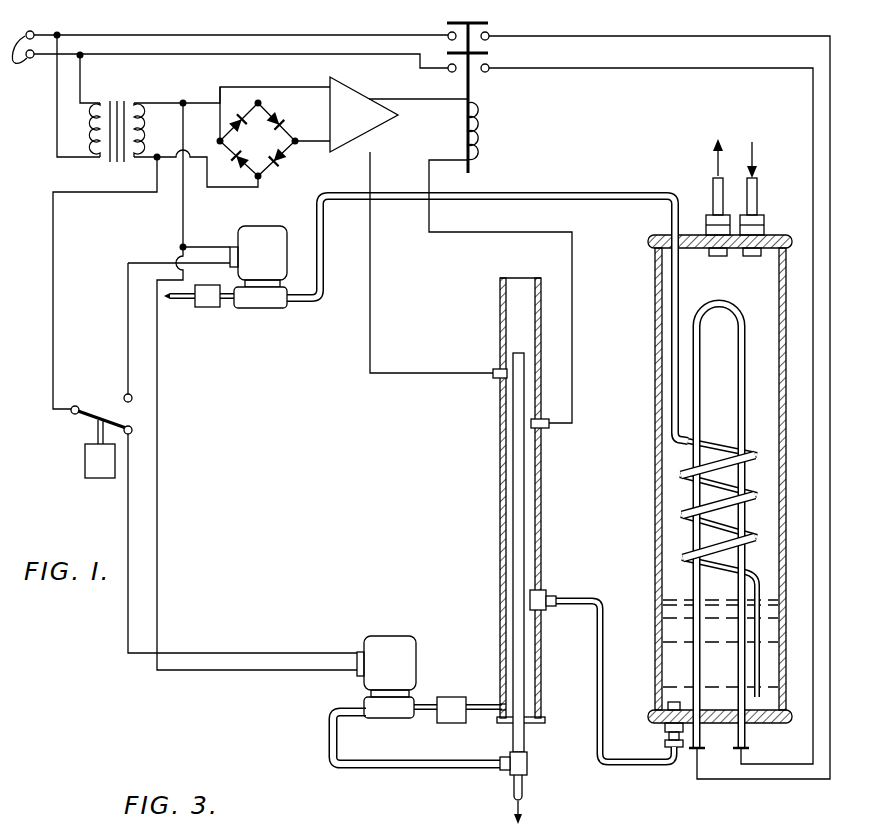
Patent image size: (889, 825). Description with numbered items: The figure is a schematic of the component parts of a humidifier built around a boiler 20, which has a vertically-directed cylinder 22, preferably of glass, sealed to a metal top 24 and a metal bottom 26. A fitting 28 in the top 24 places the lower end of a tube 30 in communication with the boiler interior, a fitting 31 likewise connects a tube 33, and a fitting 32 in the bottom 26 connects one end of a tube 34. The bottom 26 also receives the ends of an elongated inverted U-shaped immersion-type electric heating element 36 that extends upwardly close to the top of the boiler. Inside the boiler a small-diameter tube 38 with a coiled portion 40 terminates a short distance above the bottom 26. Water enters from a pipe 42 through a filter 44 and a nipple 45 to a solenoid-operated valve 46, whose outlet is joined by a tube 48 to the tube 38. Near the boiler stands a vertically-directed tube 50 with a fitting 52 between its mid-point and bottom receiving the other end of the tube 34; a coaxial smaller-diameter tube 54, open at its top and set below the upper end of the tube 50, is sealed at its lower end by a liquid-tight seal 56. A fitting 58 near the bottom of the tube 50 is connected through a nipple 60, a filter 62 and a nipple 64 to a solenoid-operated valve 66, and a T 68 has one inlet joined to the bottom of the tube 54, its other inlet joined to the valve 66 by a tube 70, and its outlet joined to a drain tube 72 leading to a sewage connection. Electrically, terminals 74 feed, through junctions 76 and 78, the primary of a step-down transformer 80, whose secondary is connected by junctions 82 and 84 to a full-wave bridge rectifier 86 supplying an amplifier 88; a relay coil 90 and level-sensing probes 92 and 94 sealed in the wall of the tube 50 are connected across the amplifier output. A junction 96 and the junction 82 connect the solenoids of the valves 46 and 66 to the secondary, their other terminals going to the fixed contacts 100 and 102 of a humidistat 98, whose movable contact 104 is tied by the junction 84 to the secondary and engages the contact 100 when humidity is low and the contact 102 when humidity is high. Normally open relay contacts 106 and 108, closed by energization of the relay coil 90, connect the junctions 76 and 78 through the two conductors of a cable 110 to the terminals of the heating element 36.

The boiler 20 is at (573, 449).
The cylinder 22 is at (657, 495).
The top 24 is at (764, 236).
The bottom 26 is at (771, 724).
The fitting 28 is at (717, 257).
The tube 30 is at (713, 180).
The fitting 31 is at (752, 256).
The fitting 32 is at (667, 729).
The tube 33 is at (758, 180).
The tube 34 is at (627, 767).
The heating element 36 is at (722, 322).
The small-diameter tube 38 is at (762, 662).
The coiled portion 40 is at (684, 516).
The pipe 42 is at (176, 305).
The filter 44 is at (208, 309).
The nipple 45 is at (230, 304).
The solenoid-operated valve 46 is at (284, 309).
The tube 48 is at (584, 193).
The vertically-directed tube 50 is at (515, 518).
The fitting 52 is at (548, 592).
The smaller-diameter tube 54 is at (524, 518).
The liquid-tight seal 56 is at (537, 725).
The fitting 58 is at (497, 704).
The nipple 60 is at (478, 724).
The filter 62 is at (444, 722).
The nipple 64 is at (416, 705).
The solenoid-operated valve 66 is at (385, 719).
The T 68 is at (527, 772).
The tube 70 is at (395, 766).
The drain tube 72 is at (512, 796).
The electric terminals 74 is at (22, 69).
The junction 76 is at (60, 33).
The junction 78 is at (83, 59).
The step-down transformer 80 is at (104, 168).
The junction 82 is at (190, 88).
The junction 84 is at (158, 162).
The full-wave bridge rectifier 86 is at (263, 172).
The amplifier 88 is at (353, 101).
The relay coil 90 is at (478, 136).
The level-sensing probe 92 is at (492, 377).
The level-sensing probe 94 is at (548, 429).
The junction 96 is at (185, 246).
The humidistat 98 is at (90, 487).
The fixed contact 100 is at (134, 398).
The fixed contact 102 is at (134, 432).
The movable contact 104 is at (95, 418).
The relay contacts 106 is at (490, 34).
The relay contacts 108 is at (480, 77).
The cable 110 is at (738, 68).